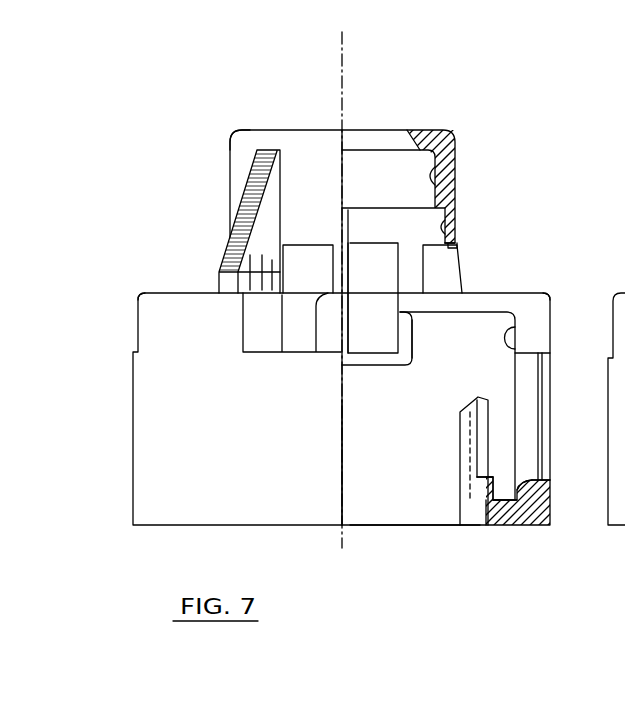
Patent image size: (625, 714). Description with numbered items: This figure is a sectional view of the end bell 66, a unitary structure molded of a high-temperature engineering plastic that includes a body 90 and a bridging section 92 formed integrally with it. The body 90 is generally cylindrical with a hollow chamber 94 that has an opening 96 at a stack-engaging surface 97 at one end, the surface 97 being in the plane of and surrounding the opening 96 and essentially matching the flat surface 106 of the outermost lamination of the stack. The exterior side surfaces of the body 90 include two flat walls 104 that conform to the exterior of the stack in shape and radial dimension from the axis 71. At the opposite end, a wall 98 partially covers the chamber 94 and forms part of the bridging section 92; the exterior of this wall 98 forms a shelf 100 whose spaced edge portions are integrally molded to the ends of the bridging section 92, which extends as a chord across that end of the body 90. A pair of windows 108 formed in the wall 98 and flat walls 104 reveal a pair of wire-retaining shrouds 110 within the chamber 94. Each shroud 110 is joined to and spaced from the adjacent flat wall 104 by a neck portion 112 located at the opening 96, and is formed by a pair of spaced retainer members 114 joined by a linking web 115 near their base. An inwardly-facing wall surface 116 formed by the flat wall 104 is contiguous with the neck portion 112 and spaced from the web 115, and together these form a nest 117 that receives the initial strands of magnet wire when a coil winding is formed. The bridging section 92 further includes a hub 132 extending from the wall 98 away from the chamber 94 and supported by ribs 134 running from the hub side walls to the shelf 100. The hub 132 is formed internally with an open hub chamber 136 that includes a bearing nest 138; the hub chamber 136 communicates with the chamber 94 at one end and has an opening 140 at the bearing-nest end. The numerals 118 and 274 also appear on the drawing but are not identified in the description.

The end bell 66 is at (532, 133).
The axis 71 is at (338, 55).
The body 90 is at (128, 485).
The bridging section 92 is at (228, 183).
The chamber 94 is at (503, 333).
The opening 96 is at (437, 525).
The stack-engaging surface 97 is at (360, 525).
The wall 98 is at (472, 312).
The shelf 100 is at (138, 290).
The flat wall 104 is at (548, 452).
The flat surface 106 is at (533, 525).
The window 108 is at (523, 423).
The wire-retaining shroud 110 is at (457, 429).
The neck portion 112 is at (493, 525).
The retainer member 114 is at (483, 447).
The linking web 115 is at (483, 490).
The inwardly-facing wall surface 116 is at (518, 525).
The nest 117 is at (503, 455).
The channel floor 118 is at (508, 525).
The hub 132 is at (243, 145).
The rib 134 is at (240, 258).
The hub chamber 136 is at (442, 222).
The bearing nest 138 is at (433, 170).
The opening 140 is at (402, 132).
The skirt foot 274 is at (455, 240).